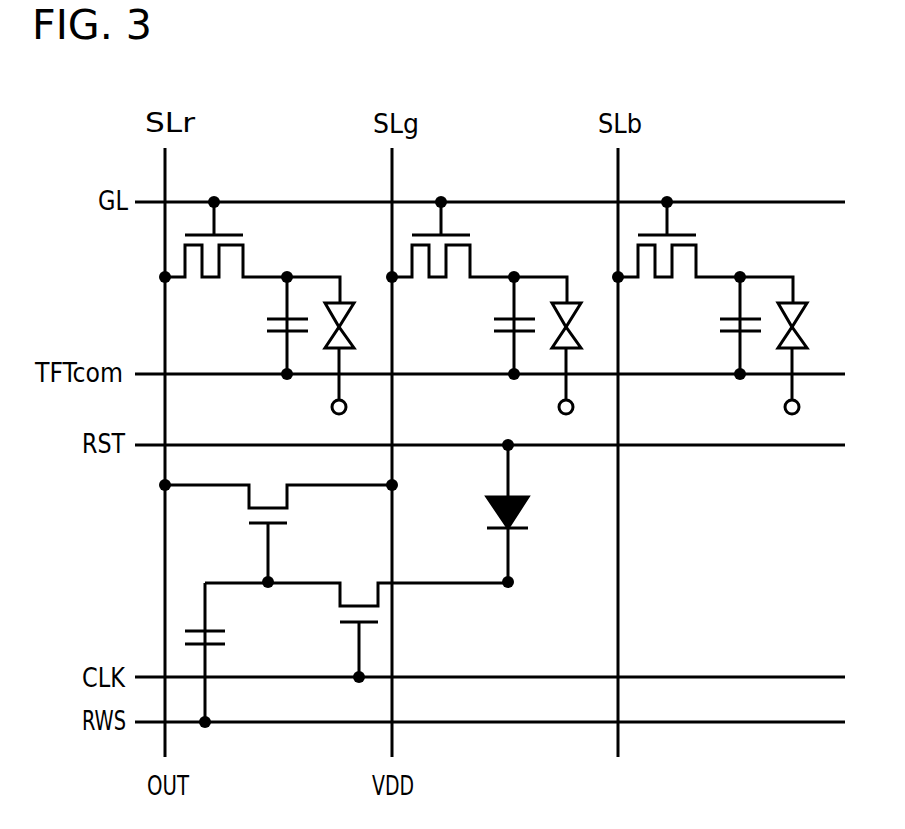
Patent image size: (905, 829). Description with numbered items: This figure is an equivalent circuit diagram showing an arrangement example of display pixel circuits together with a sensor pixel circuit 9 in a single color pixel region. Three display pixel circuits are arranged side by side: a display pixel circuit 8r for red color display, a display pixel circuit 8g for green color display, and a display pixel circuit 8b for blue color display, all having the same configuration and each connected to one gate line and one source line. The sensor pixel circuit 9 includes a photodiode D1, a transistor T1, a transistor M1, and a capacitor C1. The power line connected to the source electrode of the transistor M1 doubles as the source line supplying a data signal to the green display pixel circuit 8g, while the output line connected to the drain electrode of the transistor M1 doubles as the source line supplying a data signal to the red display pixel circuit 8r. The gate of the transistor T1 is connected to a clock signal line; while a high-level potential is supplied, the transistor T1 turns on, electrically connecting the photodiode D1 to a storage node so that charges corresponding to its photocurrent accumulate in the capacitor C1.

The display pixel circuit for red color display 8r is at (263, 230).
The display pixel circuit for green color display 8g is at (495, 232).
The display pixel circuit for blue color display 8b is at (733, 230).
The sensor pixel circuit 9 is at (296, 583).
The transistor M1 is at (278, 519).
The transistor T1 is at (345, 652).
The capacitor C1 is at (222, 655).
The photodiode D1 is at (530, 513).